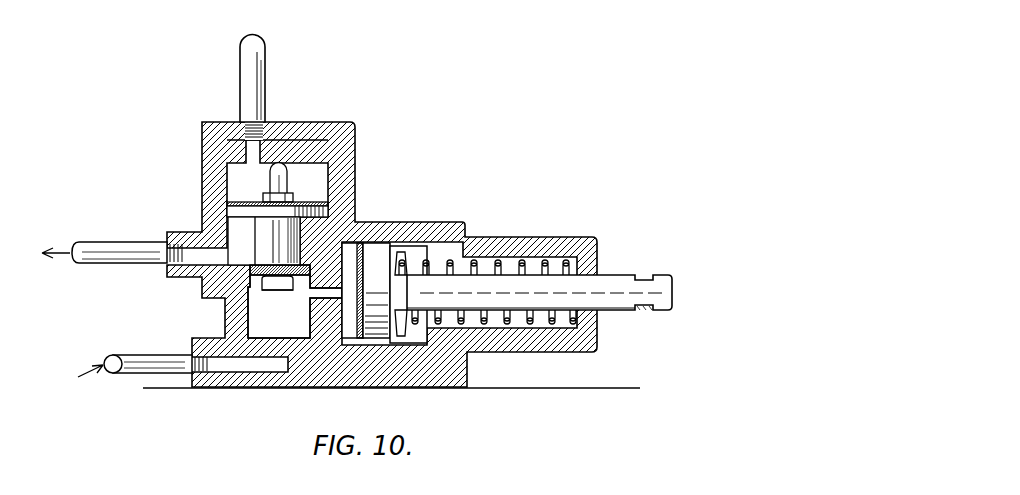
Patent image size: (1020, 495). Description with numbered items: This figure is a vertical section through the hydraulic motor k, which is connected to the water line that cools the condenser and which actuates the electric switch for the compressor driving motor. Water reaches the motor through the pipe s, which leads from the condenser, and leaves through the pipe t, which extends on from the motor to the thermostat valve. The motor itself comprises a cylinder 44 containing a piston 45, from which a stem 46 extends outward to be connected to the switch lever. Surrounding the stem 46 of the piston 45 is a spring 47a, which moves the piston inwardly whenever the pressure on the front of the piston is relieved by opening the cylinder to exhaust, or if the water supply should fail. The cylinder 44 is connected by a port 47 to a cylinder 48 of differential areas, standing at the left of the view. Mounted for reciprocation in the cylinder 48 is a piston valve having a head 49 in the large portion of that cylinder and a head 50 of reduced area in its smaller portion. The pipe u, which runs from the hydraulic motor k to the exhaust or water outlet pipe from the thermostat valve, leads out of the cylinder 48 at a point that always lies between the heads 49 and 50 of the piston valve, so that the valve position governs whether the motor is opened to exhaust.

The pipe t is at (258, 78).
The hydraulic motor k is at (202, 162).
The head 49 is at (237, 210).
The pipe u is at (120, 244).
The head 50 is at (292, 268).
The cylinder 48 is at (243, 240).
The port 47 is at (312, 292).
The cylinder 44 is at (357, 246).
The piston 45 is at (382, 253).
The spring 47a is at (483, 260).
The stem 46 is at (612, 280).
The pipe s is at (145, 355).